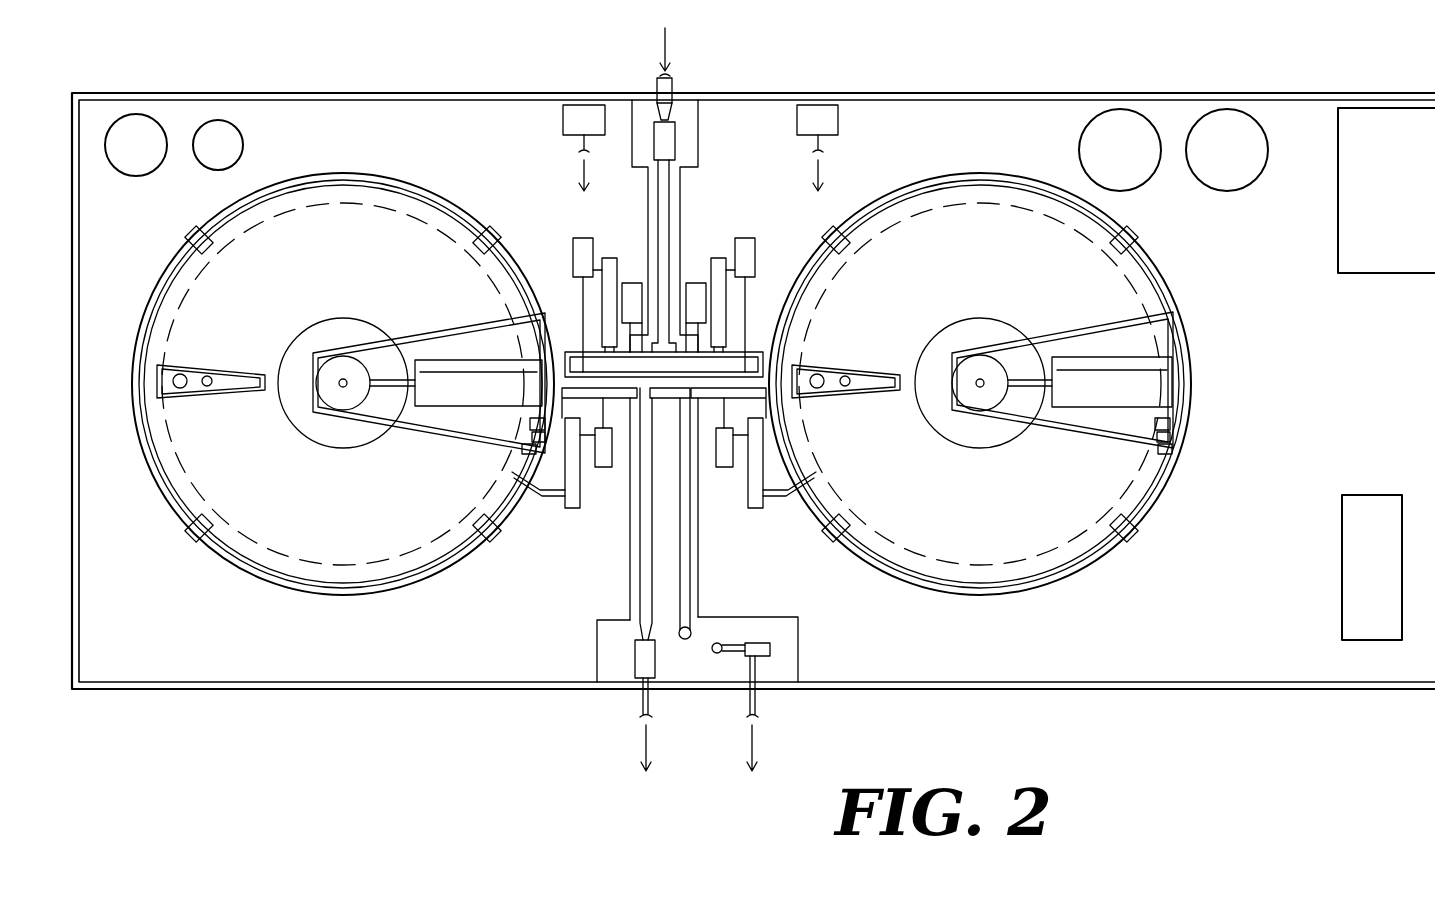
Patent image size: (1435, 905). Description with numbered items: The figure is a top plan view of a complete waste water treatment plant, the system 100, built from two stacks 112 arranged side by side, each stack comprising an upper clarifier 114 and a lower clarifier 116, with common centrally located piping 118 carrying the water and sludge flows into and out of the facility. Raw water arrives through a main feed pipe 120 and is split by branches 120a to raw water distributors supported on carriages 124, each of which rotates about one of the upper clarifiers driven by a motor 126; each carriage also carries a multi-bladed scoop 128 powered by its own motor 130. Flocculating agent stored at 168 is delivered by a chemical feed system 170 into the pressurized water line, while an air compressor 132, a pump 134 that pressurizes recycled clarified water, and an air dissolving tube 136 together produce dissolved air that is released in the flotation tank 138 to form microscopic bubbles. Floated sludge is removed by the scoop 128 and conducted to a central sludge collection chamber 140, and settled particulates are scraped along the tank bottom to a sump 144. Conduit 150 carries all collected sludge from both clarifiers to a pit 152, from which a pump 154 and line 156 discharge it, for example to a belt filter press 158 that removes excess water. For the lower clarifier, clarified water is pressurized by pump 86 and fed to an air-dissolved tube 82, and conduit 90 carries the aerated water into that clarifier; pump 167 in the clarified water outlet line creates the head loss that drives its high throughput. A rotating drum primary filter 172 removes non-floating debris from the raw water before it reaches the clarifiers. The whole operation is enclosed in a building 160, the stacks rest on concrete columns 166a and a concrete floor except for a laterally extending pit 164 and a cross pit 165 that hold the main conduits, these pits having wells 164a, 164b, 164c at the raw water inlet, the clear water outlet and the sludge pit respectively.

The system 100 is at (796, 58).
The stack 112 is at (415, 130).
The upper clarifier 114 is at (416, 176).
The lower clarifier 116 is at (452, 196).
The piping 118 is at (688, 212).
The main feed pipe 120 is at (669, 226).
The branch 120a is at (555, 320).
The carriage 124 is at (440, 326).
The motor 126 is at (524, 448).
The multi-bladed scoop 128 is at (493, 362).
The motor 130 is at (530, 425).
The air compressor 132 is at (628, 283).
The pump 134 is at (573, 256).
The air dissolving tube 136 is at (609, 258).
The flotation tank 138 is at (358, 258).
The central sludge collection chamber 140 is at (343, 360).
The sump 144 is at (190, 372).
The conduit 150 is at (690, 560).
The pit 152 is at (693, 650).
The pump 154 is at (770, 650).
The line 156 is at (760, 704).
The belt filter press 158 is at (1342, 585).
The building 160 is at (1222, 82).
The pit 164 is at (640, 562).
The well 164a is at (687, 118).
The well 164b is at (597, 650).
The well 164c is at (783, 618).
The cross pit 165 is at (790, 336).
The column 166a is at (195, 235).
The pump 167 is at (597, 622).
The flocculating agent storage 168 is at (152, 156).
The chemical feed system 170 is at (600, 131).
The rotating drum primary filter 172 is at (1338, 200).
The air-dissolved tube 82 is at (580, 506).
The pump 86 is at (603, 468).
The conduit 90 is at (548, 497).